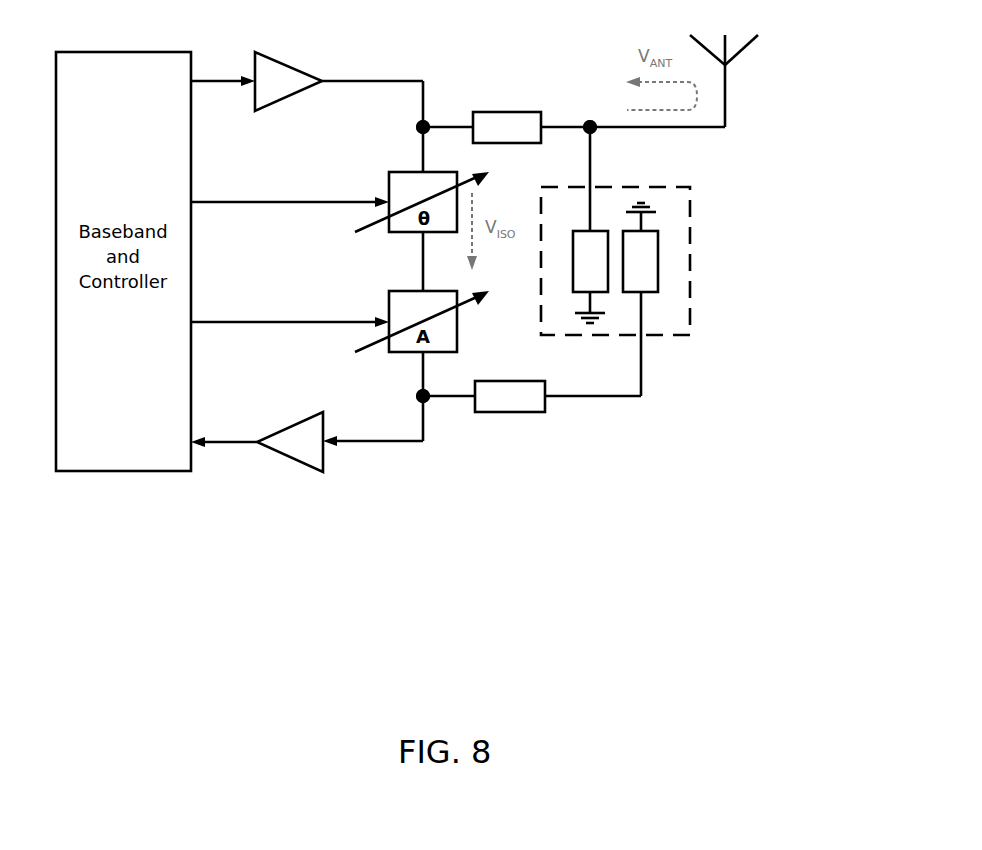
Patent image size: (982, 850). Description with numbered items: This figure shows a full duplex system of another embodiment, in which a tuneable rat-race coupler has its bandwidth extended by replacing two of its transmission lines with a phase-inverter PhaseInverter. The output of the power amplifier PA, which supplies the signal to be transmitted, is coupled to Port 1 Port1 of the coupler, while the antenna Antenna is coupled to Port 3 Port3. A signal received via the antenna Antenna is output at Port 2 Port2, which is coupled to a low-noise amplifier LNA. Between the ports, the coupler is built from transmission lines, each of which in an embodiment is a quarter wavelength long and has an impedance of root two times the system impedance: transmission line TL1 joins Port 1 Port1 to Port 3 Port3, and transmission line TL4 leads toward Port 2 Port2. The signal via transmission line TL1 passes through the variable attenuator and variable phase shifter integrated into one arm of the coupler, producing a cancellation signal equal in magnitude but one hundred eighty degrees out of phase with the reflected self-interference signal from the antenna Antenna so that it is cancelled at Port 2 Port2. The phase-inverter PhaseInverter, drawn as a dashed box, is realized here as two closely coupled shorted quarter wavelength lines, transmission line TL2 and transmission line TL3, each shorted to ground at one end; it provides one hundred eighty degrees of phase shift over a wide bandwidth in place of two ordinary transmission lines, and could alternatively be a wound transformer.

The power amplifier PA is at (288, 69).
The low-noise amplifier LNA is at (314, 442).
The Port 1 Port1 is at (456, 102).
The Port 2 Port2 is at (452, 420).
The Port 3 Port3 is at (623, 136).
The antenna Antenna is at (749, 81).
The transmission line TL1 is at (507, 127).
The transmission line TL2 is at (590, 277).
The transmission line TL3 is at (640, 247).
The transmission line TL4 is at (510, 396).
The phase-inverter PhaseInverter is at (655, 261).